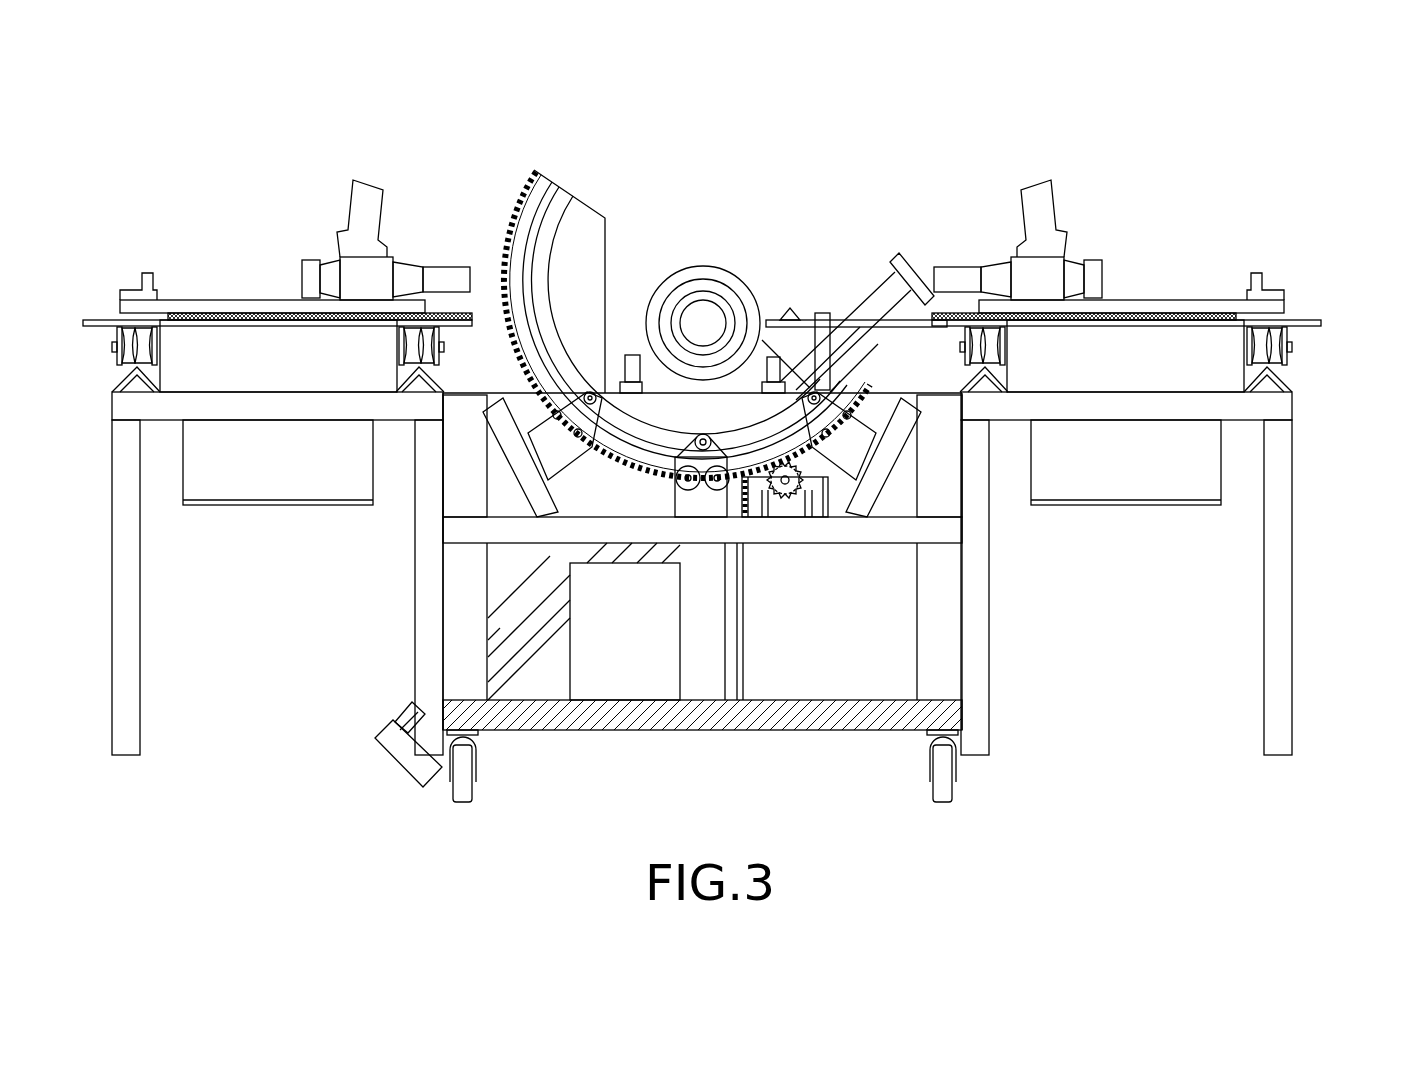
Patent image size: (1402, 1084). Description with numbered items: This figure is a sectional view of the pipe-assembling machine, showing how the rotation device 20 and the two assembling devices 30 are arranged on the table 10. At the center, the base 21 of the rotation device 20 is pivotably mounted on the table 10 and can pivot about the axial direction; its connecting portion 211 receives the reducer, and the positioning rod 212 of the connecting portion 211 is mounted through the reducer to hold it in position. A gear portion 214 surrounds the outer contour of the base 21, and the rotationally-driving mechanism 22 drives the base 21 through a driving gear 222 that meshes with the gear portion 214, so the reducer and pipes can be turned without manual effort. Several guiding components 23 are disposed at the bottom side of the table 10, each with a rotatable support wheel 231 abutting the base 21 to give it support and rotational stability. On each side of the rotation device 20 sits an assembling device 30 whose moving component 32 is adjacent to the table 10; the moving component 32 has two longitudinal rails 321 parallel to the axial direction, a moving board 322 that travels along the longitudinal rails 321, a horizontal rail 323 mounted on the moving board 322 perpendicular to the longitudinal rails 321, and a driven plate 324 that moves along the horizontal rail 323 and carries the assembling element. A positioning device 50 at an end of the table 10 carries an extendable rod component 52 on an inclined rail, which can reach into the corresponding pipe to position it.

The table 10 is at (945, 408).
The rotation device 20 is at (674, 367).
The base 21 is at (594, 205).
The connecting portion 211 is at (622, 390).
The positioning rod 212 is at (632, 355).
The gear portion 214 is at (518, 212).
The rotationally-driving mechanism 22 is at (806, 522).
The driving gear 222 is at (780, 492).
The guiding component 23 is at (702, 505).
The support wheel 231 is at (690, 440).
The assembling device 30 is at (704, 445).
The moving component 32 is at (98, 362).
The longitudinal rail 321 is at (1288, 375).
The moving board 322 is at (1298, 321).
The horizontal rail 323 is at (1048, 322).
The driven plate 324 is at (1198, 302).
The positioning device 50 is at (387, 695).
The extendable rod component 52 is at (733, 262).